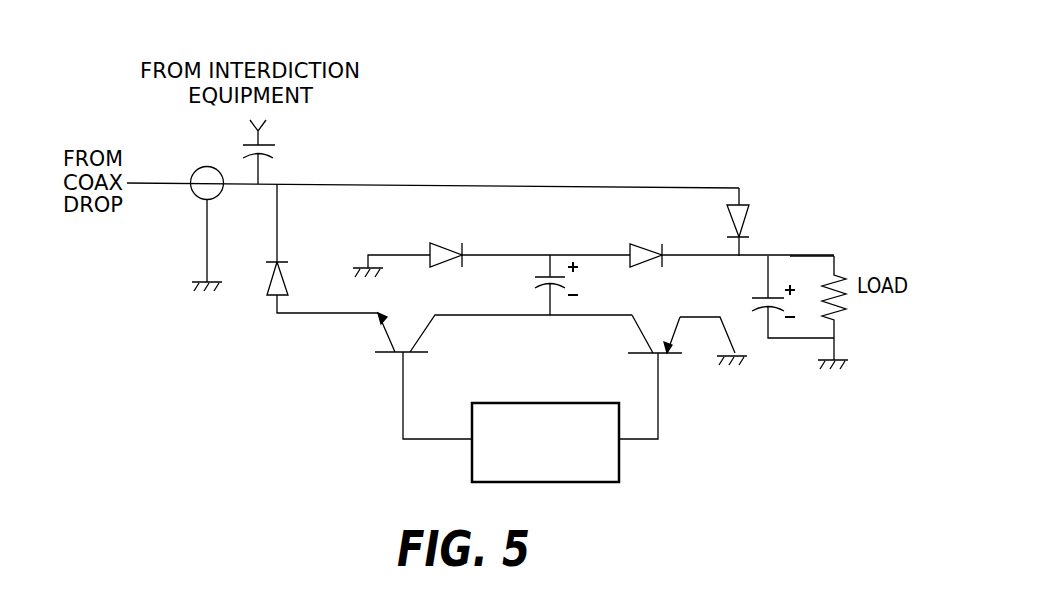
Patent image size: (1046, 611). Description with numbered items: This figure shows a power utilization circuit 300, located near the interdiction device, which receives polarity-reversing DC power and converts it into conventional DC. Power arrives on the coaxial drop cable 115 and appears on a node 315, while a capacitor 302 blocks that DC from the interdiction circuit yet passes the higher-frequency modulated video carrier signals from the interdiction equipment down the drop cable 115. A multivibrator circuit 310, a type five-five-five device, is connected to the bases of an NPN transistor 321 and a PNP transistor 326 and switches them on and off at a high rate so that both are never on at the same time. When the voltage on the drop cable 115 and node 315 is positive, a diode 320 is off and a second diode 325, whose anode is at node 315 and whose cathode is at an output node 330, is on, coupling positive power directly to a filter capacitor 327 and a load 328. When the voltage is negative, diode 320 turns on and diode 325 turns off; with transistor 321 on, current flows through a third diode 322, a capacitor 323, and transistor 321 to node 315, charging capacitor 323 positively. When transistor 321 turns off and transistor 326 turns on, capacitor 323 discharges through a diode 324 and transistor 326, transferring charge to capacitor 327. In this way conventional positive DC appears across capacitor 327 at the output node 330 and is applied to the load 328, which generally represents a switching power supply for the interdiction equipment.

The coaxial drop cable 115 is at (157, 184).
The power utilization circuit 300 is at (682, 144).
The capacitor 302 is at (267, 143).
The multivibrator circuit 310 is at (619, 457).
The node 315 is at (463, 185).
The diode 320 is at (268, 282).
The NPN transistor 321 is at (387, 355).
The third diode 322 is at (447, 242).
The capacitor 323 is at (540, 284).
The diode 324 is at (650, 245).
The second diode 325 is at (745, 220).
The PNP transistor 326 is at (667, 357).
The filter capacitor 327 is at (752, 302).
The load 328 is at (840, 315).
The output node 330 is at (812, 255).